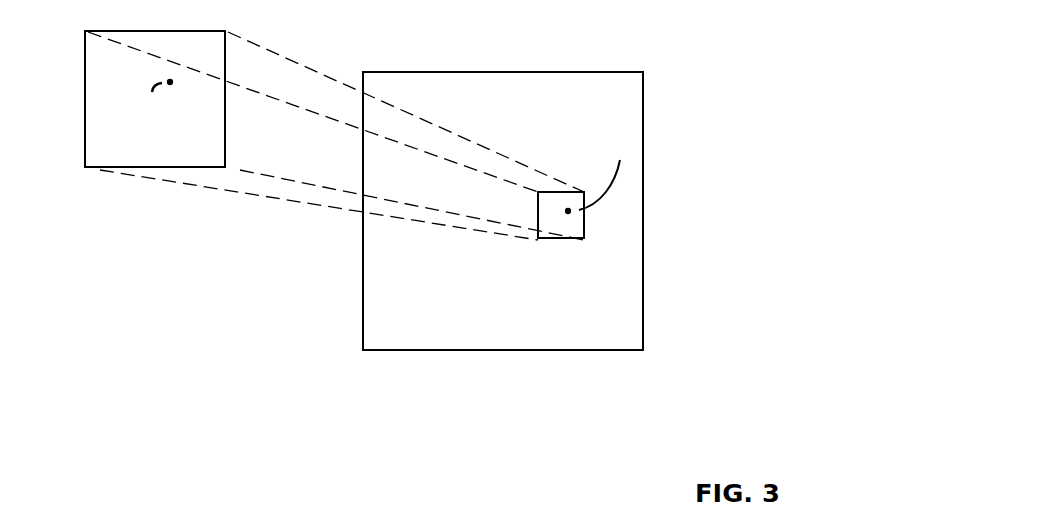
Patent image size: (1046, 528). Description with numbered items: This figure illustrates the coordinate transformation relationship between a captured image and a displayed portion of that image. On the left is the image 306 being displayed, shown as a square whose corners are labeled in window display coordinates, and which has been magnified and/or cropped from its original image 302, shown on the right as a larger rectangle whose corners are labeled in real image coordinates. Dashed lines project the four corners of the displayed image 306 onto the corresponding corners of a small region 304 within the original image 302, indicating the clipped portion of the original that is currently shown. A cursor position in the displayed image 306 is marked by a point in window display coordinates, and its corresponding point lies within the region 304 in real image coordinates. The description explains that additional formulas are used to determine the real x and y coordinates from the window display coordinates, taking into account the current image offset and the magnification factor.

The original image 302 is at (643, 213).
The projected region of interest on acquisition plane 304 is at (563, 240).
The displayed image 306 is at (225, 97).